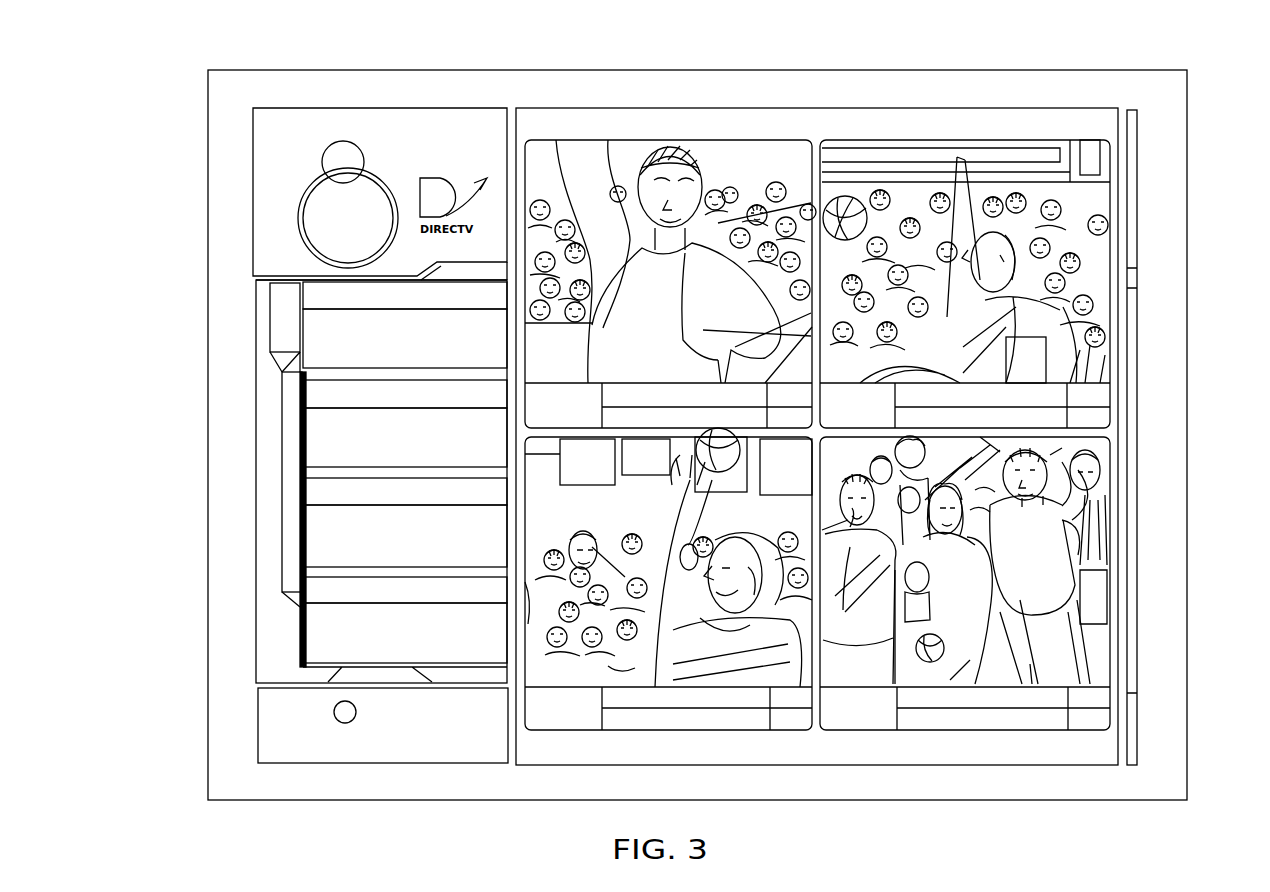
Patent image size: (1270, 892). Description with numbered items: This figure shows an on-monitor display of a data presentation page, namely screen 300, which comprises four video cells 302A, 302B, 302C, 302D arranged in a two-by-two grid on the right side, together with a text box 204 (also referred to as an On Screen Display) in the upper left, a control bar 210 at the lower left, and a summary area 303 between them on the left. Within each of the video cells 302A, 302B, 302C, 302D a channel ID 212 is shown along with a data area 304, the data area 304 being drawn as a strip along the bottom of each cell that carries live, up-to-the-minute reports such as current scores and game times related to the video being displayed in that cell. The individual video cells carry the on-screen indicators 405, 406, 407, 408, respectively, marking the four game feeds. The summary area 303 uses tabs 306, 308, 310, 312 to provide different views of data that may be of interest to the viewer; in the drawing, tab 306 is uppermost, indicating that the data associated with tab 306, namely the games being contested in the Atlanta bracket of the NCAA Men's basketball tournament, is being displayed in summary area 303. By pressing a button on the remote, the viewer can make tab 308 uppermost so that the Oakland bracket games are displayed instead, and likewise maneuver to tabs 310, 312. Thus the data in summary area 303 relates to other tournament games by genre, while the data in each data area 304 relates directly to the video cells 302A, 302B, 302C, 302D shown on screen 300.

The screen 300 is at (737, 45).
The text box 204 is at (350, 141).
The channel ID 212 is at (560, 175).
The data area 304 is at (548, 385).
The video cell 302A is at (639, 230).
The video cell 302B is at (967, 234).
The video cell 302C is at (668, 613).
The video cell 302D is at (1040, 583).
The summary area 303 is at (275, 632).
The tab 306 is at (275, 347).
The tab 308 is at (280, 420).
The tab 310 is at (280, 503).
The tab 312 is at (280, 588).
The control bar 210 is at (285, 730).
The first game video 405 is at (552, 162).
The second game video 406 is at (854, 160).
The third game video 407 is at (552, 471).
The fourth game video 408 is at (849, 454).